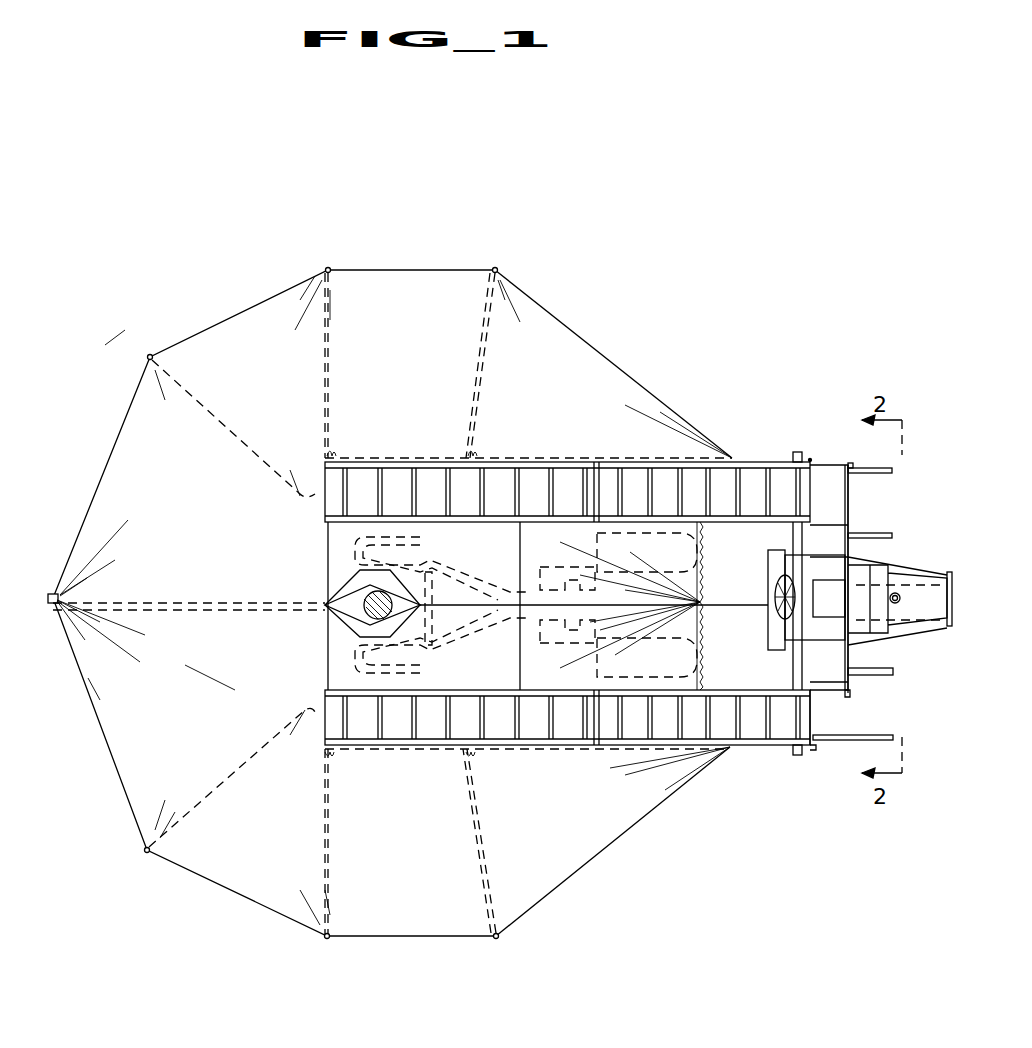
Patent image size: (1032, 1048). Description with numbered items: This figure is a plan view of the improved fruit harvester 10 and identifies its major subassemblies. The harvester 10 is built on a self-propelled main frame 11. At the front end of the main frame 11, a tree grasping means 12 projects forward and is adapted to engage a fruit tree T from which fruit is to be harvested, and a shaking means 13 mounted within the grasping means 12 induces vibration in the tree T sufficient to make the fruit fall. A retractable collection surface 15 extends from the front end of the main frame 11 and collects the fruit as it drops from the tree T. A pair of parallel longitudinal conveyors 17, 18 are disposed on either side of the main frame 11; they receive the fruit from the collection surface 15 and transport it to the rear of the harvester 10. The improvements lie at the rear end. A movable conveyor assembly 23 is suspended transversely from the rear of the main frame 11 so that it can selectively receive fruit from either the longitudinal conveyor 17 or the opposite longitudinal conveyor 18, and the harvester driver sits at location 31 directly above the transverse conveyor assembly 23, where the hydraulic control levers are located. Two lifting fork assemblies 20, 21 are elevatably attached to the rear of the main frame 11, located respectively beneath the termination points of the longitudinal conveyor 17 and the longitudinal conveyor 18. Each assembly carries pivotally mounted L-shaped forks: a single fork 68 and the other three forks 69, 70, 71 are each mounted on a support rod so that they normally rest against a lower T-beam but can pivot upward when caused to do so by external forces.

The fruit harvester 10 is at (612, 266).
The retractable collection surface 15 is at (404, 278).
The longitudinal conveyor 18 is at (507, 463).
The longitudinal conveyor 17 is at (560, 742).
The shaking means 13 is at (420, 548).
The tree grasping means 12 is at (350, 622).
The fruit tree T is at (370, 596).
The main frame 11 is at (570, 642).
The movable conveyor assembly 23 is at (838, 462).
The fork 71 is at (878, 466).
The lifting fork assembly 21 is at (875, 530).
The fork 70 is at (892, 536).
The fork 69 is at (893, 668).
The lifting fork assembly 20 is at (862, 730).
The L-shaped fork 68 is at (829, 740).
The driver location 31 is at (814, 580).